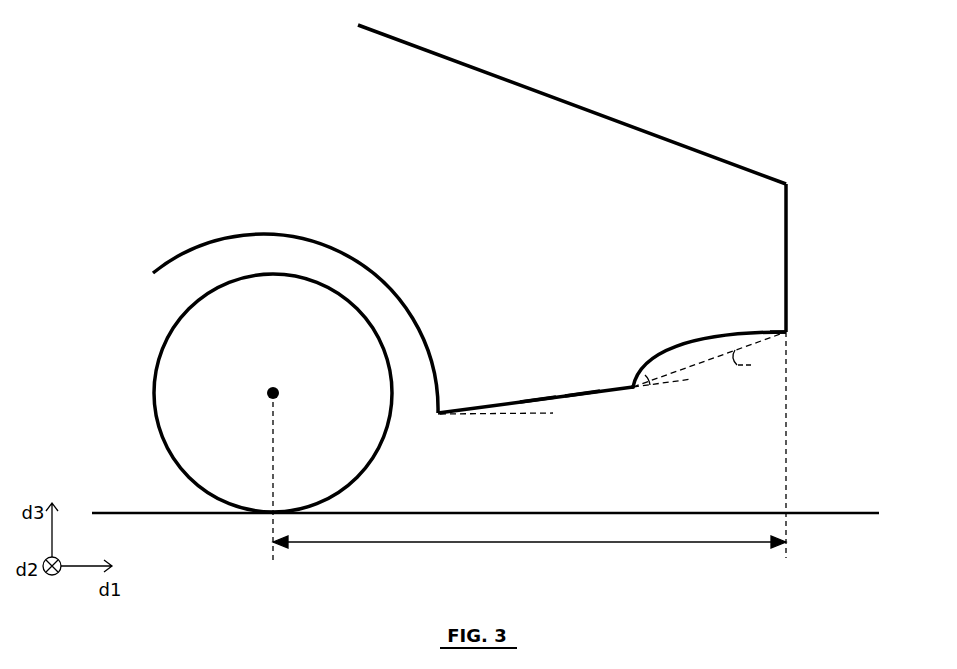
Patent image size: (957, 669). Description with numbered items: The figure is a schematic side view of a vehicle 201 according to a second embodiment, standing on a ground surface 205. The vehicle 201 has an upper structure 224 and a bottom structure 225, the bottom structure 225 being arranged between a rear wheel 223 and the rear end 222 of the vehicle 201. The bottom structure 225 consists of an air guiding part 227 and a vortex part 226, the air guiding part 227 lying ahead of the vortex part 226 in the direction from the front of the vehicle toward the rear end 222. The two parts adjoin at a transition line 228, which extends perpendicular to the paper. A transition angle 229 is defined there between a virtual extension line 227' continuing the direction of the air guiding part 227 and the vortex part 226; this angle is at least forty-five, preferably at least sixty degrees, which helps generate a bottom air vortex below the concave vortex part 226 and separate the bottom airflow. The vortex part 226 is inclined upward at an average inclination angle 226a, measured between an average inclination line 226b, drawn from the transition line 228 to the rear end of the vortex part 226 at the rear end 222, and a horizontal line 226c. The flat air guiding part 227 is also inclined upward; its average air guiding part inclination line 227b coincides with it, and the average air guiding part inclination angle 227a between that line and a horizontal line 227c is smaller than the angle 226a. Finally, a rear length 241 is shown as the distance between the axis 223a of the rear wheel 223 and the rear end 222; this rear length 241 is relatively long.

The vehicle 201 is at (293, 118).
The ground surface 205 is at (660, 512).
The rear end 222 is at (783, 245).
The rear wheel 223 is at (157, 420).
The axis 223a is at (270, 392).
The upper structure 224 is at (593, 110).
The bottom structure 225 is at (583, 310).
The vortex part 226 is at (678, 340).
The average inclination angle 226a is at (745, 358).
The average inclination line 226b is at (752, 343).
The horizontal line 226c is at (718, 368).
The air guiding part 227 is at (535, 377).
The average air guiding part inclination angle 227a is at (538, 404).
The average air guiding part inclination line 227b is at (583, 395).
The horizontal line 227c is at (505, 414).
The virtual extension line 227' is at (671, 401).
The transition line 228 is at (633, 389).
The transition angle 229 is at (650, 375).
The rear length 241 is at (532, 545).